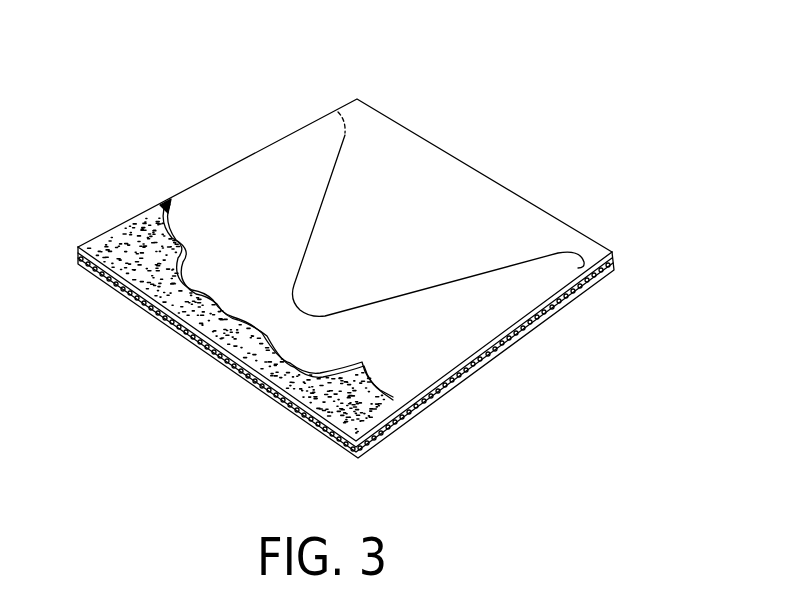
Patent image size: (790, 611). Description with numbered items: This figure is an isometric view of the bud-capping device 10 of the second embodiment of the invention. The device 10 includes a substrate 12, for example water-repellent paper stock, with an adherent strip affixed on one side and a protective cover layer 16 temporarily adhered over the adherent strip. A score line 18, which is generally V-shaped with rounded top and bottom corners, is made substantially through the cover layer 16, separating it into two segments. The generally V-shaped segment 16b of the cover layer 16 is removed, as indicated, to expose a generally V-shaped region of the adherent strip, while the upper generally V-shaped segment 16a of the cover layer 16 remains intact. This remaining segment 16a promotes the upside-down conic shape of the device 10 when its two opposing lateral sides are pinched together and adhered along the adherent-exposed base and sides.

The bud-capping device 10 is at (688, 60).
The substrate 12 is at (111, 288).
The cover layer 16 is at (378, 281).
The upper segment of cover layer 16a is at (552, 232).
The V-shaped segment of cover layer 16b is at (533, 306).
The score line 18 is at (346, 134).